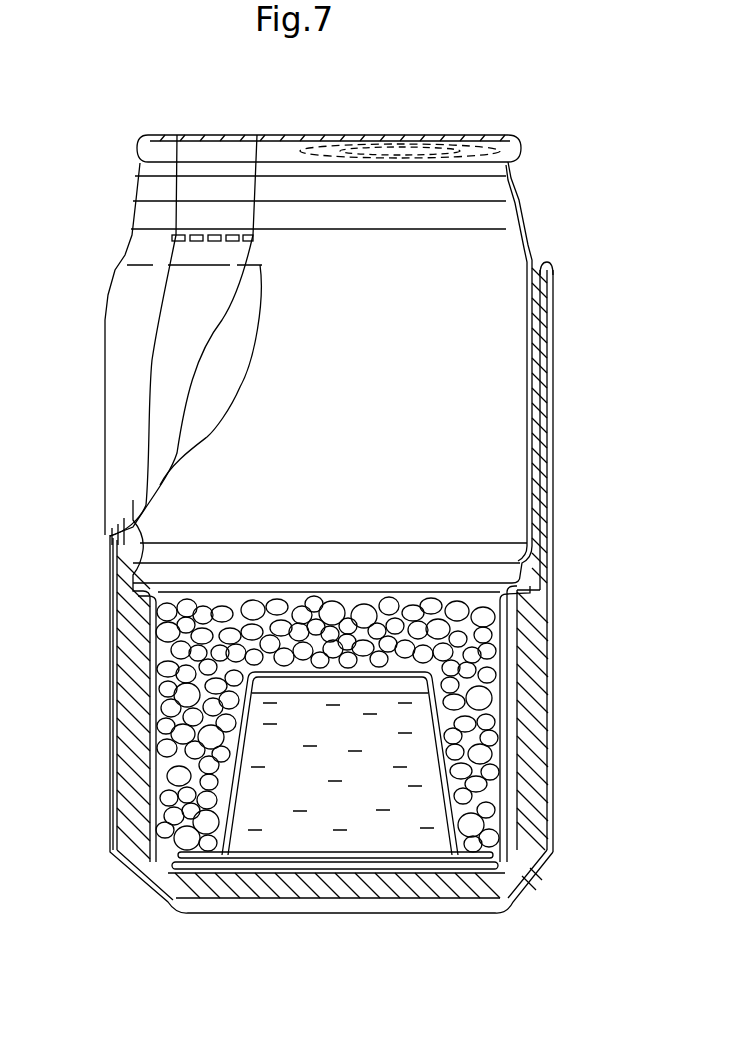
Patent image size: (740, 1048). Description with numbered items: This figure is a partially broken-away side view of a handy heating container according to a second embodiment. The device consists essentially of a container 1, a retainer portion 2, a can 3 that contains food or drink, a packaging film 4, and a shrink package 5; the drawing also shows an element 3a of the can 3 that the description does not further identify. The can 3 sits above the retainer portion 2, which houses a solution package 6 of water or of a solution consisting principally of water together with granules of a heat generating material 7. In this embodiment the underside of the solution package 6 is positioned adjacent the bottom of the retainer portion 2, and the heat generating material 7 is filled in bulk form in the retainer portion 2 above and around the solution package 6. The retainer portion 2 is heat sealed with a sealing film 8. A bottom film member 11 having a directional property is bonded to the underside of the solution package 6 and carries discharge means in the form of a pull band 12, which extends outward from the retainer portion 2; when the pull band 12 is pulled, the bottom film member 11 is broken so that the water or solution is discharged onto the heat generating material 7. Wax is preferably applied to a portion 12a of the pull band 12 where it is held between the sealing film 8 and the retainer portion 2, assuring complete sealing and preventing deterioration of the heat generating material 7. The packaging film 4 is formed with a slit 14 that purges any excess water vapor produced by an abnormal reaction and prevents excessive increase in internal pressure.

The container 1 is at (535, 633).
The retainer portion 2 is at (158, 714).
The can 3 is at (520, 386).
The can lid 3a is at (510, 213).
The packaging film 4 is at (545, 452).
The shrink package 5 is at (547, 278).
The solution package 6 is at (165, 782).
The heat generating material 7 is at (160, 637).
The sealing film 8 is at (153, 592).
The bottom film member 11 is at (470, 862).
The pull band 12 is at (495, 706).
The portion of the pull band 12a is at (530, 586).
The slit 14 is at (190, 242).